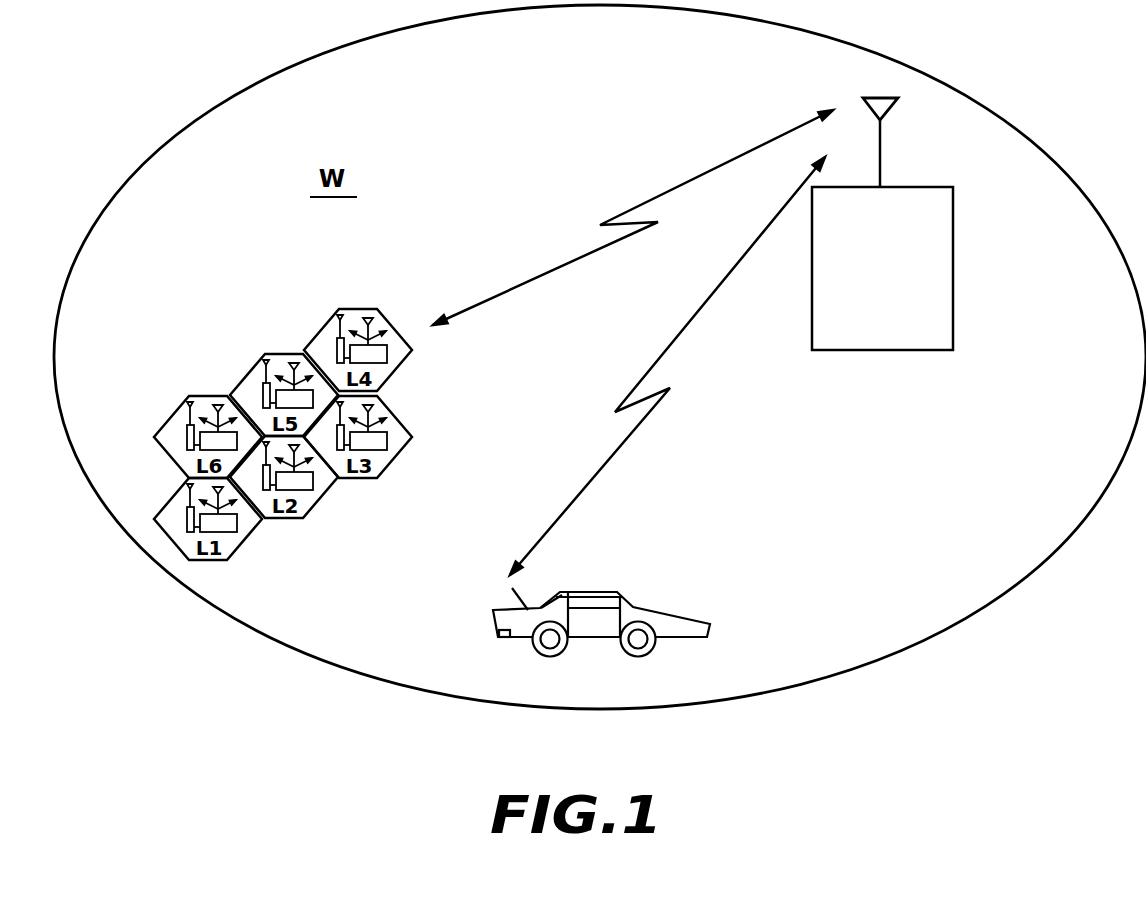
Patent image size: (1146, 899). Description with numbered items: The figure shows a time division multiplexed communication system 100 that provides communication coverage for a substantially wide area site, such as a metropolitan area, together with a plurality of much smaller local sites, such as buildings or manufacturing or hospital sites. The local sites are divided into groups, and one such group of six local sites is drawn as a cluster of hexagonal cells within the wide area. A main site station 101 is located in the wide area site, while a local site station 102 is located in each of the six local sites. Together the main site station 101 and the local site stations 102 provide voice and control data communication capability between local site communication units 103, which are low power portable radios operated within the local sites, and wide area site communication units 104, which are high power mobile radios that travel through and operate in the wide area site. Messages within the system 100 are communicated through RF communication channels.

The time division multiplexed communication system 100 is at (873, 592).
The main site station 101 is at (953, 283).
The local site station 102 is at (370, 358).
The local site communication unit 103 is at (337, 340).
The wide area site communication unit 104 is at (642, 592).